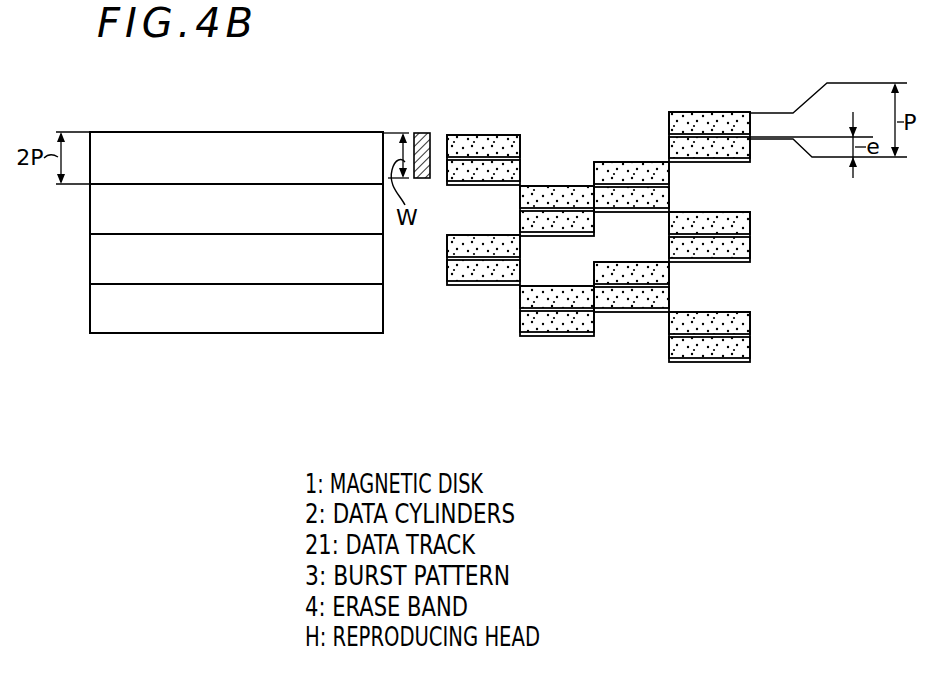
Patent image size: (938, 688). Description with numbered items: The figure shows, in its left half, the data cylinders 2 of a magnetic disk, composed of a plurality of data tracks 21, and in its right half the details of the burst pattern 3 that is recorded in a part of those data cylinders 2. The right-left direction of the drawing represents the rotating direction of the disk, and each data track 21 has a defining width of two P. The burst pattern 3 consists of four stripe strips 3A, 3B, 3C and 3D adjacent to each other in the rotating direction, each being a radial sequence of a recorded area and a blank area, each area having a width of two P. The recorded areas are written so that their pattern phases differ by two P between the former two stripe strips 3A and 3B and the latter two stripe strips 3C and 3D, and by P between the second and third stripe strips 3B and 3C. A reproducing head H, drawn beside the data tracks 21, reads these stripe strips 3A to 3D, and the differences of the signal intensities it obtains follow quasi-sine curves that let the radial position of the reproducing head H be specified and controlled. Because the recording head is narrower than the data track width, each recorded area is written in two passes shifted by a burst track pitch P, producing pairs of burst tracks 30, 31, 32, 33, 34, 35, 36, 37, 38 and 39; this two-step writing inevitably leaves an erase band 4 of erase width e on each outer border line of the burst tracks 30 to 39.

The data cylinders 2 is at (274, 116).
The data track 21 is at (152, 150).
The burst pattern 3 is at (452, 83).
The stripe strip 3A is at (519, 368).
The stripe strip 3B is at (590, 368).
The stripe strip 3C is at (600, 260).
The stripe strip 3D is at (731, 233).
The burst track 30 is at (725, 118).
The burst track 31 is at (722, 153).
The burst track 32 is at (627, 168).
The burst track 33 is at (637, 198).
The burst track 34 is at (735, 218).
The burst track 35 is at (740, 252).
The burst track 36 is at (600, 275).
The burst track 37 is at (637, 300).
The burst track 38 is at (740, 322).
The burst track 39 is at (677, 368).
The erase band 4 is at (812, 140).
The reproducing head H is at (421, 133).